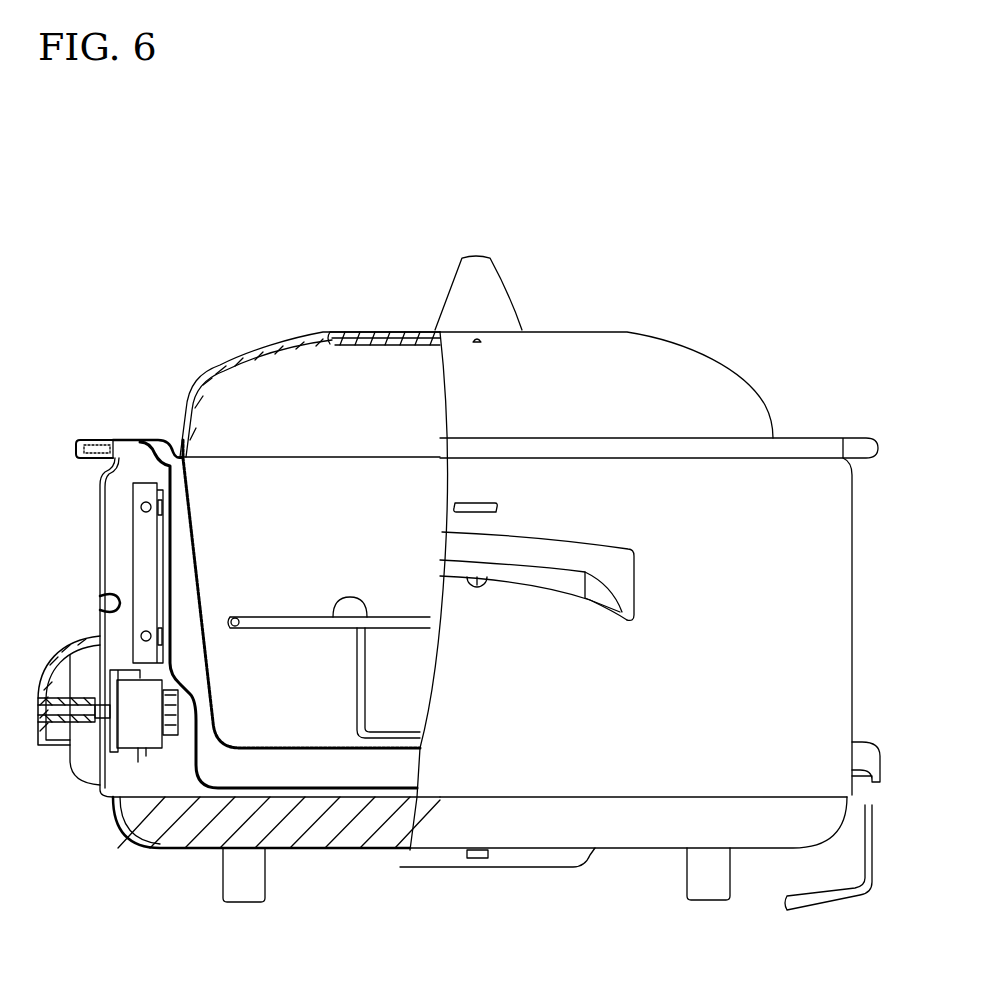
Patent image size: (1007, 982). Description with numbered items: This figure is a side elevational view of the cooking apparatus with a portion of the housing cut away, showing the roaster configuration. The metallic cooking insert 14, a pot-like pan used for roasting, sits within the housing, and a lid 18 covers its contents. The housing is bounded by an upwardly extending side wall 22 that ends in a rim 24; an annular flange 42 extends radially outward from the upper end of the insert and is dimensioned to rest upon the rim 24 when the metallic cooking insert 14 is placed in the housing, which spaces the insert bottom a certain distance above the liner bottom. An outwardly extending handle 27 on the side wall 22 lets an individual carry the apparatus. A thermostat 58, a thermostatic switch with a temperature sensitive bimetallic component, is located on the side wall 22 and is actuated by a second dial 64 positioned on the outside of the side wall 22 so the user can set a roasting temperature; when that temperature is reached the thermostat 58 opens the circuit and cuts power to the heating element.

The metallic cooking insert 14 is at (305, 748).
The lid 18 is at (588, 362).
The side wall 22 is at (643, 762).
The rim 24 is at (122, 458).
The handle 27 is at (634, 580).
The annular flange 42 is at (104, 440).
The thermostat 58 is at (140, 728).
The second dial 64 is at (45, 652).